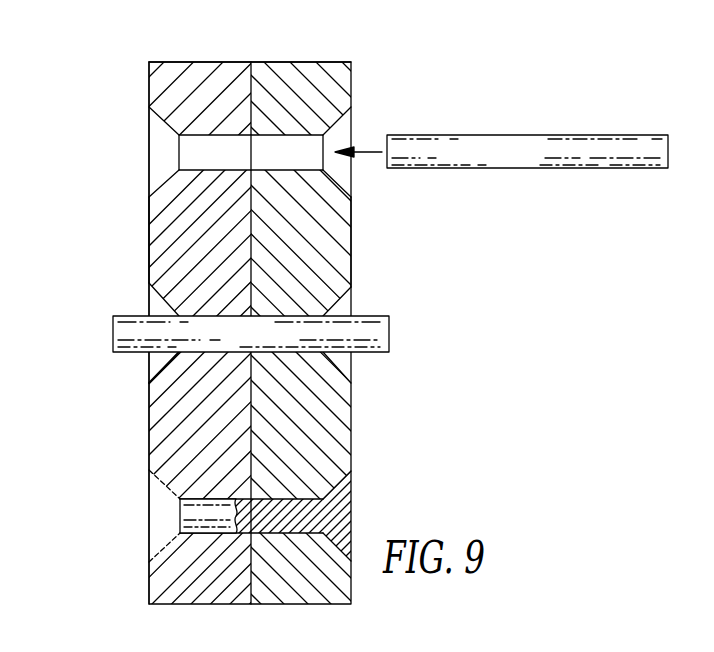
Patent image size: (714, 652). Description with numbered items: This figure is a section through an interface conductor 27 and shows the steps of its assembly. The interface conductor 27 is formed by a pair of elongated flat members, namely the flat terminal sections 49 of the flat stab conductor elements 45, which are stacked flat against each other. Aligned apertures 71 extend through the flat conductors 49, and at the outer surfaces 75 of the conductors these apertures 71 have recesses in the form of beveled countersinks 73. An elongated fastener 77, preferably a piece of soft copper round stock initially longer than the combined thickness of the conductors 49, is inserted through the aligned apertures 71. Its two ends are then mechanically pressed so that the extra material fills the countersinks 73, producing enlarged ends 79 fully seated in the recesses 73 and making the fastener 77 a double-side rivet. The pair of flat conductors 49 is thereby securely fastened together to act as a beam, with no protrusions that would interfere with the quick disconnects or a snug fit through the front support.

The interface conductor 27 is at (94, 432).
The flat stab conductor element 45 is at (120, 70).
The terminal section 49 is at (165, 62).
The aligned aperture 71 is at (186, 150).
The beveled countersink 73 is at (165, 180).
The outer surface 75 is at (149, 232).
The elongated fastener 77 is at (505, 135).
The enlarged end 79 is at (347, 497).